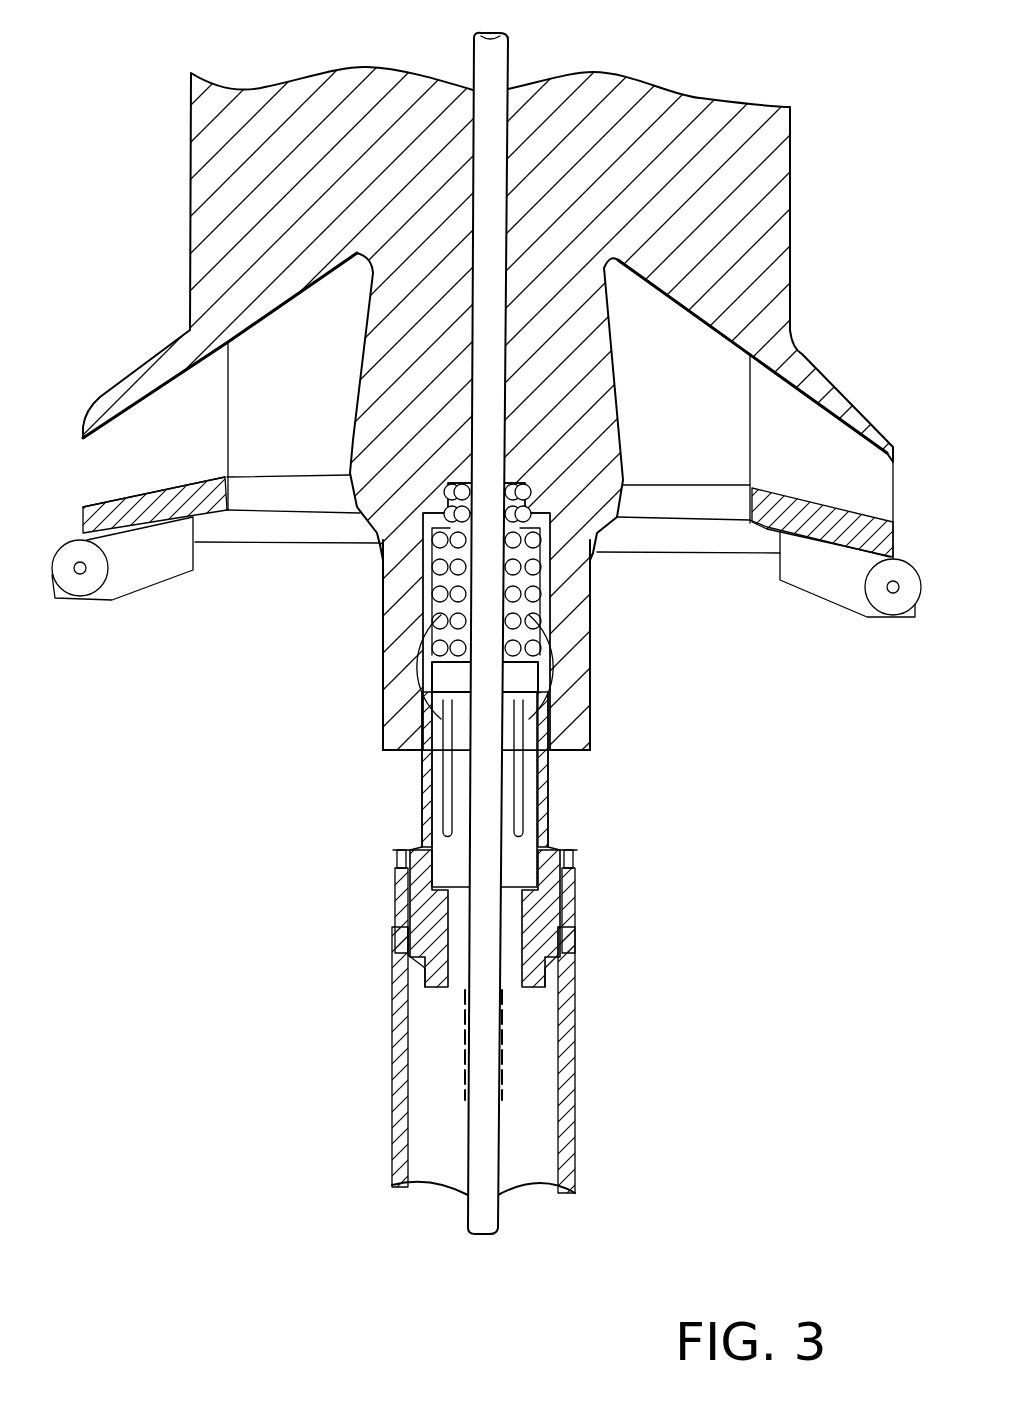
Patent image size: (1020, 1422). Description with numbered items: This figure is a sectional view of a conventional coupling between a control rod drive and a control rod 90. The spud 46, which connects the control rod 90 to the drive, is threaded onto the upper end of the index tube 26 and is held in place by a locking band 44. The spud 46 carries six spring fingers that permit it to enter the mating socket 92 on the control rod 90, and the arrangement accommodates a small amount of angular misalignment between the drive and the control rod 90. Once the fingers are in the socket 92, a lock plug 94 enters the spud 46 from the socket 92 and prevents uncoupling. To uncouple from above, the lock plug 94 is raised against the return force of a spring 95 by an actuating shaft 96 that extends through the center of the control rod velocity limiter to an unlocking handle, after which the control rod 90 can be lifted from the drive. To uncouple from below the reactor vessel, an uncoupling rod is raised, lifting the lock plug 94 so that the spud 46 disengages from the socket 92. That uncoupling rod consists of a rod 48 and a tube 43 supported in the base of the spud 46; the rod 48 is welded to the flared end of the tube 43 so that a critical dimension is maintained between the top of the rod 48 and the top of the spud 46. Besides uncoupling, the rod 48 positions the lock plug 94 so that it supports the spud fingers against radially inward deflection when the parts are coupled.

The index tube 26 is at (575, 1165).
The tube 43 is at (465, 1090).
The locking band 44 is at (575, 878).
The spud 46 is at (548, 800).
The rod 48 is at (480, 812).
The control rod 90 is at (792, 178).
The socket 92 is at (590, 668).
The lock plug 94 is at (440, 678).
The spring 95 is at (548, 612).
The actuating shaft 96 is at (509, 55).